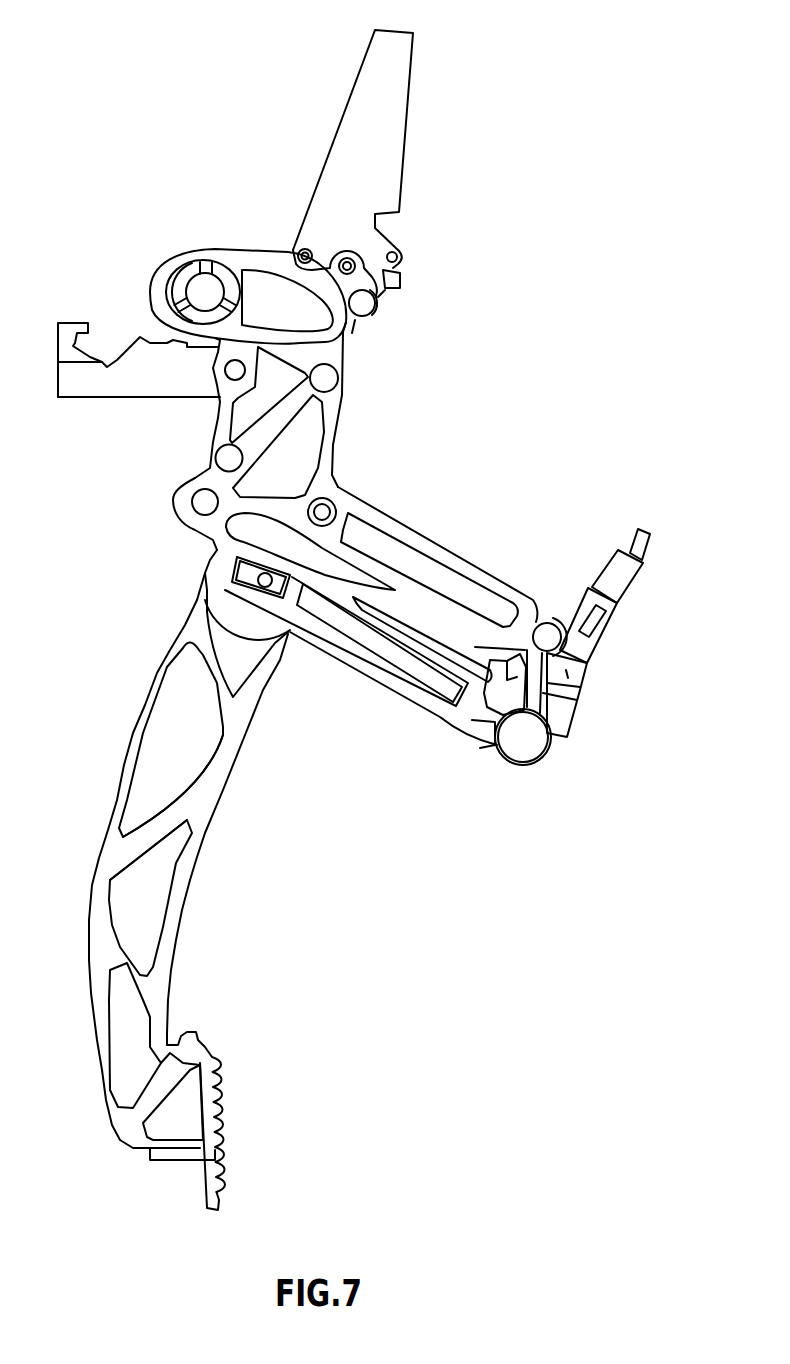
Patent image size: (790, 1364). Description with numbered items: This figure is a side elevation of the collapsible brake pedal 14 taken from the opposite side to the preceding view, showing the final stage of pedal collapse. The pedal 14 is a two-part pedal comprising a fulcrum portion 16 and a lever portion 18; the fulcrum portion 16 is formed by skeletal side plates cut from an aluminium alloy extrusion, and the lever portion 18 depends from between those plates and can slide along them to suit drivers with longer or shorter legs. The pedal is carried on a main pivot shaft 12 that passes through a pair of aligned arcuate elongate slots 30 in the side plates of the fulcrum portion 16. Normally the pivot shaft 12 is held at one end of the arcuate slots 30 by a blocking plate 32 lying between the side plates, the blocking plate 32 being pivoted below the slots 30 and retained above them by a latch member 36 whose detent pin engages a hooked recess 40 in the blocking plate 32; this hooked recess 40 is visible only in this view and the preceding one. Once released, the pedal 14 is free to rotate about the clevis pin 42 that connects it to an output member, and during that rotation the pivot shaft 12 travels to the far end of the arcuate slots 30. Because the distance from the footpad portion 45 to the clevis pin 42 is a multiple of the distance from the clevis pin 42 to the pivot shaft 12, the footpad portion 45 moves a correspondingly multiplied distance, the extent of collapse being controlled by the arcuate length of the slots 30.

The main pivot shaft 12 is at (207, 290).
The brake pedal 14 is at (188, 829).
The fulcrum portion 16 is at (440, 550).
The lever portion 18 is at (160, 673).
The arcuate elongate slots 30 is at (273, 337).
The blocking plate 32 is at (175, 383).
The latch member 36 is at (407, 142).
The hooked recess 40 is at (78, 340).
The clevis pin 42 is at (192, 502).
The footpad portion 45 is at (225, 1108).